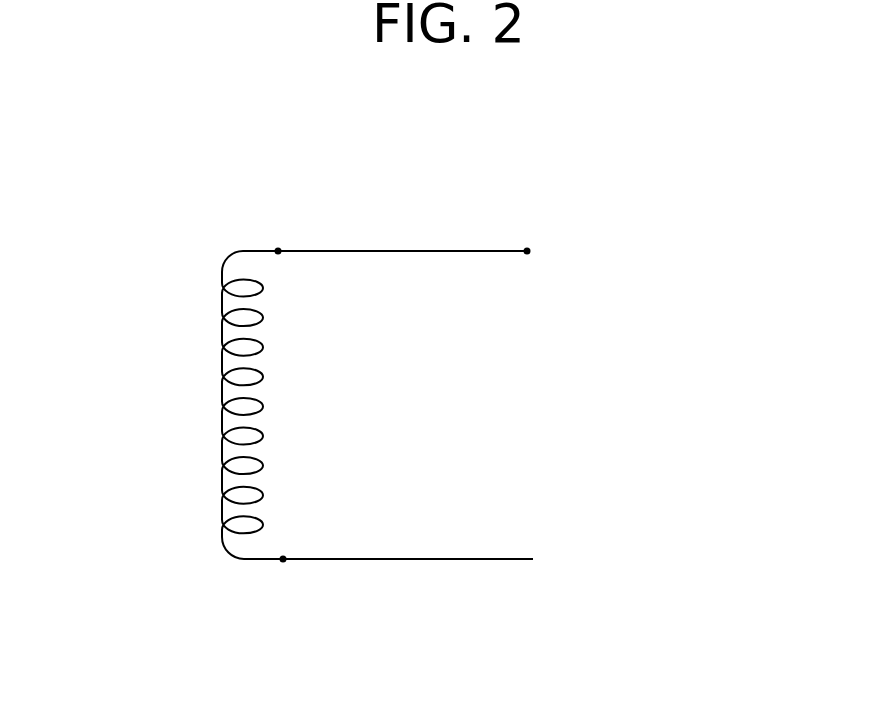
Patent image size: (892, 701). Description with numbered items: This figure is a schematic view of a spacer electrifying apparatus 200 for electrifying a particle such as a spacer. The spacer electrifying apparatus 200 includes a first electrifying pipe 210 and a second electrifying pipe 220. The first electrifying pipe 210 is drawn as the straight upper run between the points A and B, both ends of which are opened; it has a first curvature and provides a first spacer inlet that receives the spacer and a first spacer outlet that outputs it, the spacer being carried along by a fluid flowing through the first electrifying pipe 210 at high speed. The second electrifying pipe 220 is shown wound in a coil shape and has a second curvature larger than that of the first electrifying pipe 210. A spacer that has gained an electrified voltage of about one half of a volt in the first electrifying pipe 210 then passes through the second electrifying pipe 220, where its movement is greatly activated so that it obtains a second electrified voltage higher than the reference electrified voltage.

The spacer electrifying apparatus 200 is at (382, 380).
The first electrifying pipe 210 is at (382, 251).
The second electrifying pipe 220 is at (202, 379).